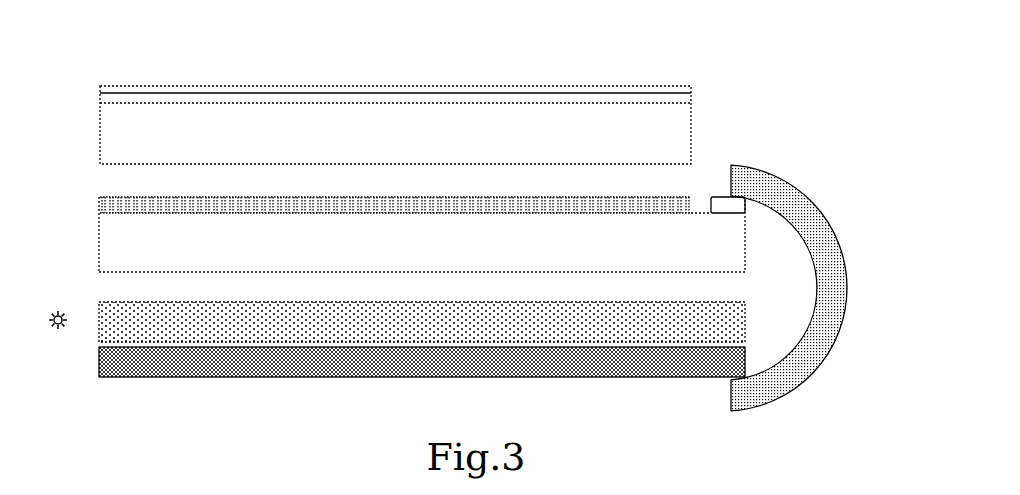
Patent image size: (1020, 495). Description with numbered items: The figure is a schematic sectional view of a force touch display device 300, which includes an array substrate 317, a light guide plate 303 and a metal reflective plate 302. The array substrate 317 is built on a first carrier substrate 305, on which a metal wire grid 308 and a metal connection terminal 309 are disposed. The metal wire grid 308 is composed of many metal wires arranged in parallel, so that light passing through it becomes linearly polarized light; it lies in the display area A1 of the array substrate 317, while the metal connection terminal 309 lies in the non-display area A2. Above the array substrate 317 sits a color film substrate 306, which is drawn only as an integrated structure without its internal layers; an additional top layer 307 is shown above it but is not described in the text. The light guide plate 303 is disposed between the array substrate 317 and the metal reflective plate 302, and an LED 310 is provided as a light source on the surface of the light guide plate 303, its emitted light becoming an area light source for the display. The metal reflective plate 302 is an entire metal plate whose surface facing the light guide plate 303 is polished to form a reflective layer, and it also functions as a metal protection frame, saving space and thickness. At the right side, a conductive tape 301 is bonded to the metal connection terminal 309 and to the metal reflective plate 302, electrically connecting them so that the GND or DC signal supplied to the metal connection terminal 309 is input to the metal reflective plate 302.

The force touch display device 300 is at (744, 57).
The conductive tape 301 is at (822, 282).
The metal reflective plate 302 is at (745, 363).
The light guide plate 303 is at (745, 320).
The first carrier substrate 305 is at (745, 243).
The color film substrate 306 is at (691, 133).
The top film layer 307 is at (691, 93).
The metal wire grid 308 is at (633, 197).
The metal connection terminal 309 is at (745, 205).
The LED 310 is at (58, 330).
The array substrate 317 is at (93, 230).
The display area A1 is at (115, 193).
The non-display area A2 is at (702, 200).